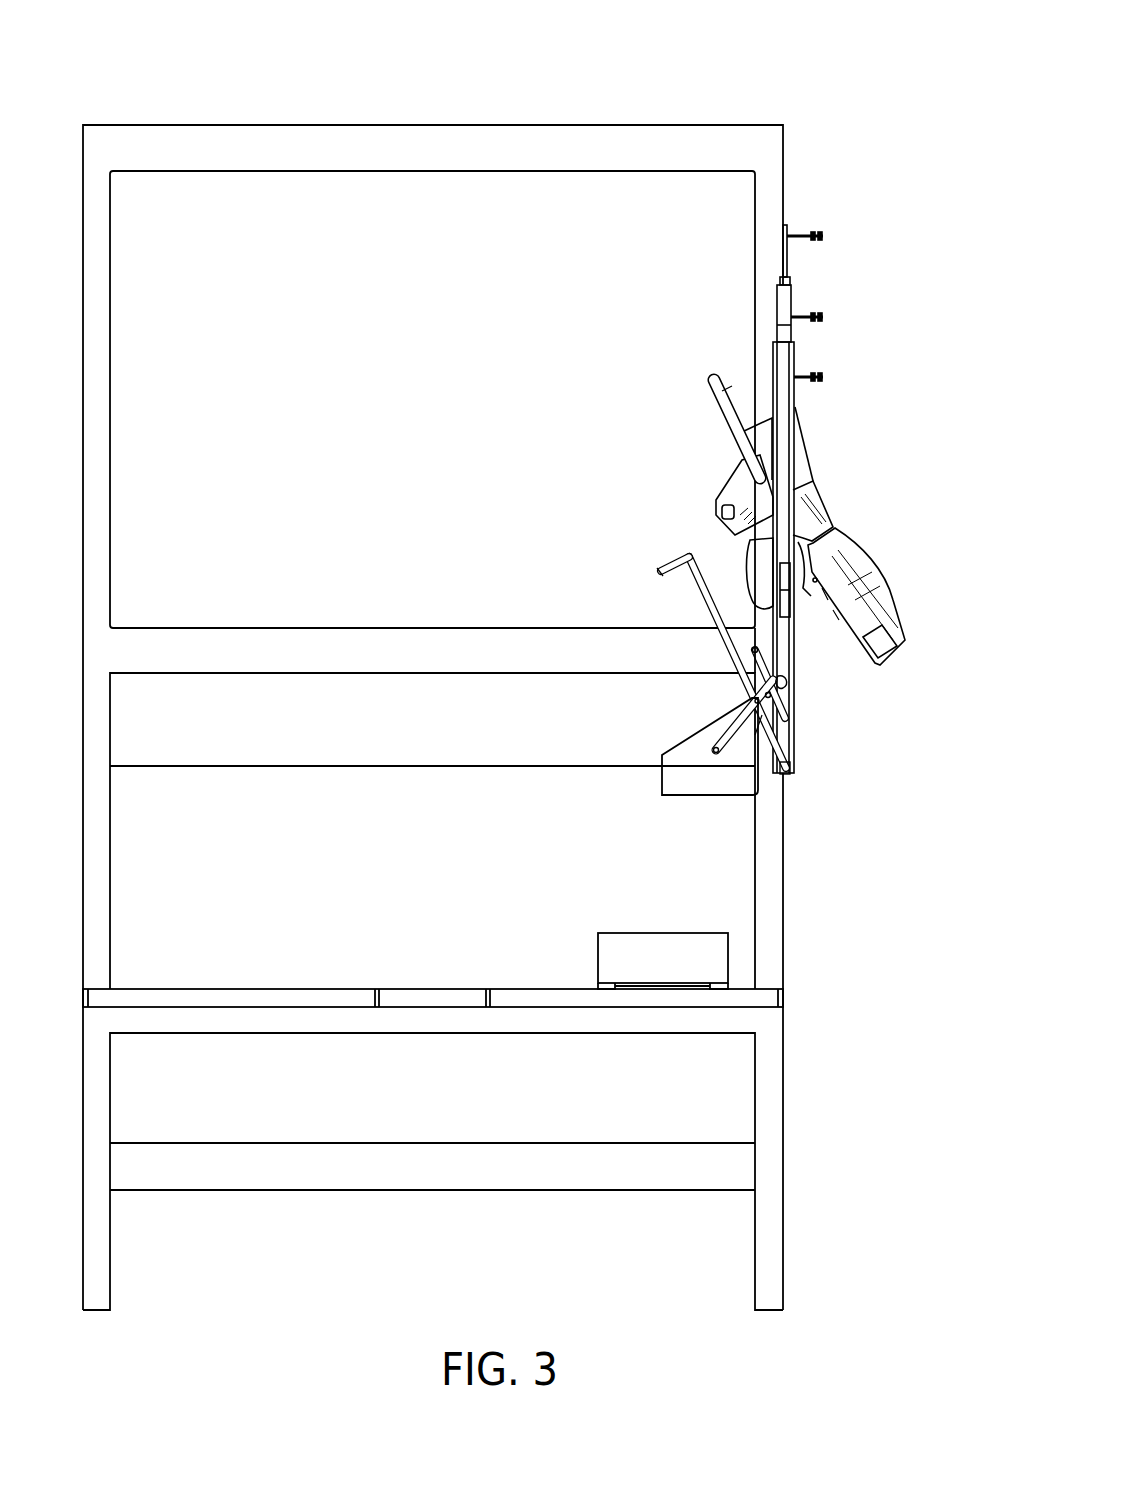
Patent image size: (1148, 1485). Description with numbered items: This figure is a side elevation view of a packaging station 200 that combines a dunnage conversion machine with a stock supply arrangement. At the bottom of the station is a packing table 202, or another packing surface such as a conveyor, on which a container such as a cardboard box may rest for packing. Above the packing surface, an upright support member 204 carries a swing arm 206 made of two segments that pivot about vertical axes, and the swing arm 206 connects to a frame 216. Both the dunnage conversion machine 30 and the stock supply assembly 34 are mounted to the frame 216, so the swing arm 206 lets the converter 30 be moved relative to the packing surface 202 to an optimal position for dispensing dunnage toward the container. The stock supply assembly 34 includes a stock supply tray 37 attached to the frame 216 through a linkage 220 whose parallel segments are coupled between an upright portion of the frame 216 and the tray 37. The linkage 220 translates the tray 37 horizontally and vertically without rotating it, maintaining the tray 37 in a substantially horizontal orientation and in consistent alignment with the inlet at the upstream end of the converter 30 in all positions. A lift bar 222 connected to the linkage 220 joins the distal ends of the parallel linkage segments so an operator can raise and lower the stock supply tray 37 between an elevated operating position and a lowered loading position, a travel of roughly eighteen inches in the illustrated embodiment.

The packaging station 200 is at (806, 103).
The packing table 202 is at (262, 988).
The support member 204 is at (767, 207).
The swing arm 206 is at (797, 298).
The frame 216 is at (785, 433).
The dunnage conversion machine 30 is at (842, 565).
The lift bar 222 is at (665, 558).
The linkage 220 is at (787, 707).
The stock supply assembly 34 is at (828, 795).
The stock supply tray 37 is at (695, 800).